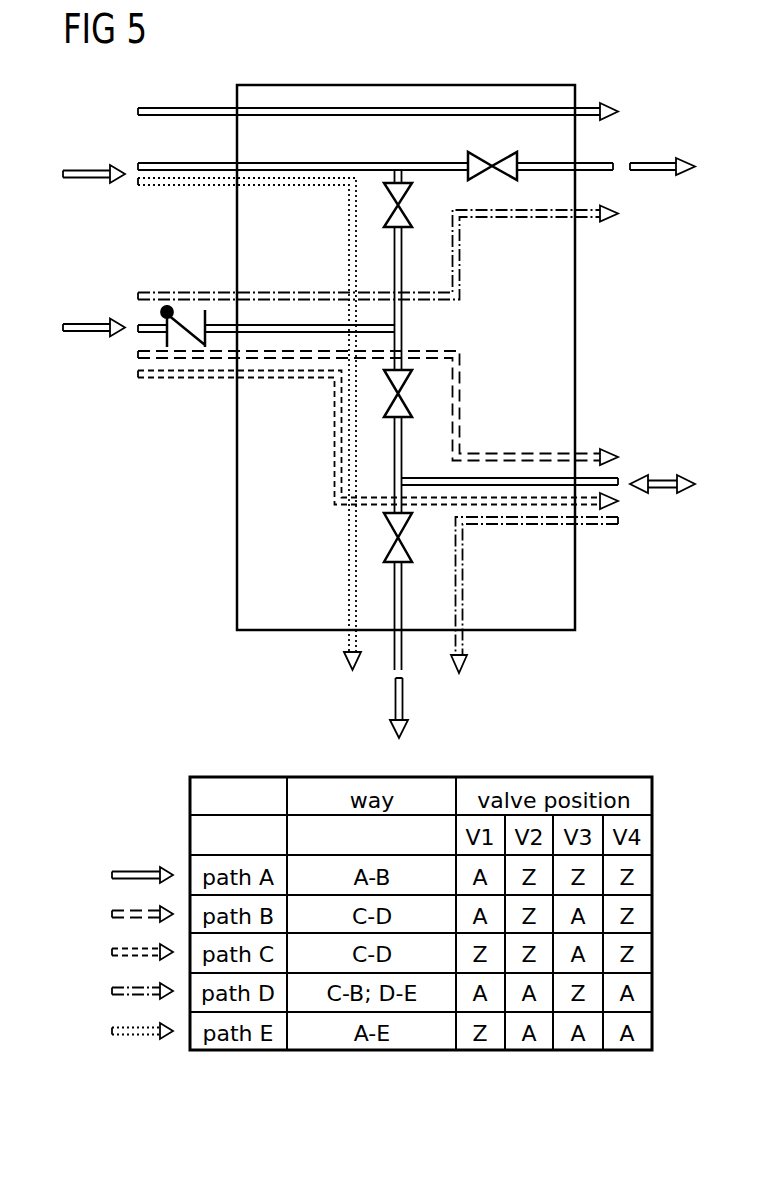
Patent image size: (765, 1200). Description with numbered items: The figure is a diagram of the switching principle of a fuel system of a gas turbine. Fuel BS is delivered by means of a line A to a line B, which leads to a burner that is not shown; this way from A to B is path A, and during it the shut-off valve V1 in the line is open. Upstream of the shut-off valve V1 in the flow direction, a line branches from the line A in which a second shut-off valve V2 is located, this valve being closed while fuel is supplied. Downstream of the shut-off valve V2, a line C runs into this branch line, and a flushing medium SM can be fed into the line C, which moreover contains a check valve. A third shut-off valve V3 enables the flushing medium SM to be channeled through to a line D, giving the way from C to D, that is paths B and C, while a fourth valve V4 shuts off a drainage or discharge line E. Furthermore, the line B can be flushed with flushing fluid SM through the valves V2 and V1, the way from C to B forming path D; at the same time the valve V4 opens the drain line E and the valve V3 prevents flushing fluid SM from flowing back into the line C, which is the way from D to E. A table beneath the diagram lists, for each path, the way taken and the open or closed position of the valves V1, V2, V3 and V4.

The fuel BS is at (95, 168).
The flushing medium SM is at (93, 322).
The line A is at (192, 170).
The line B is at (553, 171).
The line C is at (292, 325).
The line D is at (515, 477).
The drainage line E is at (406, 650).
The shut-off valve V1 is at (468, 158).
The second shut-off valve V2 is at (402, 228).
The third shut-off valve V3 is at (402, 418).
The fourth valve V4 is at (403, 563).